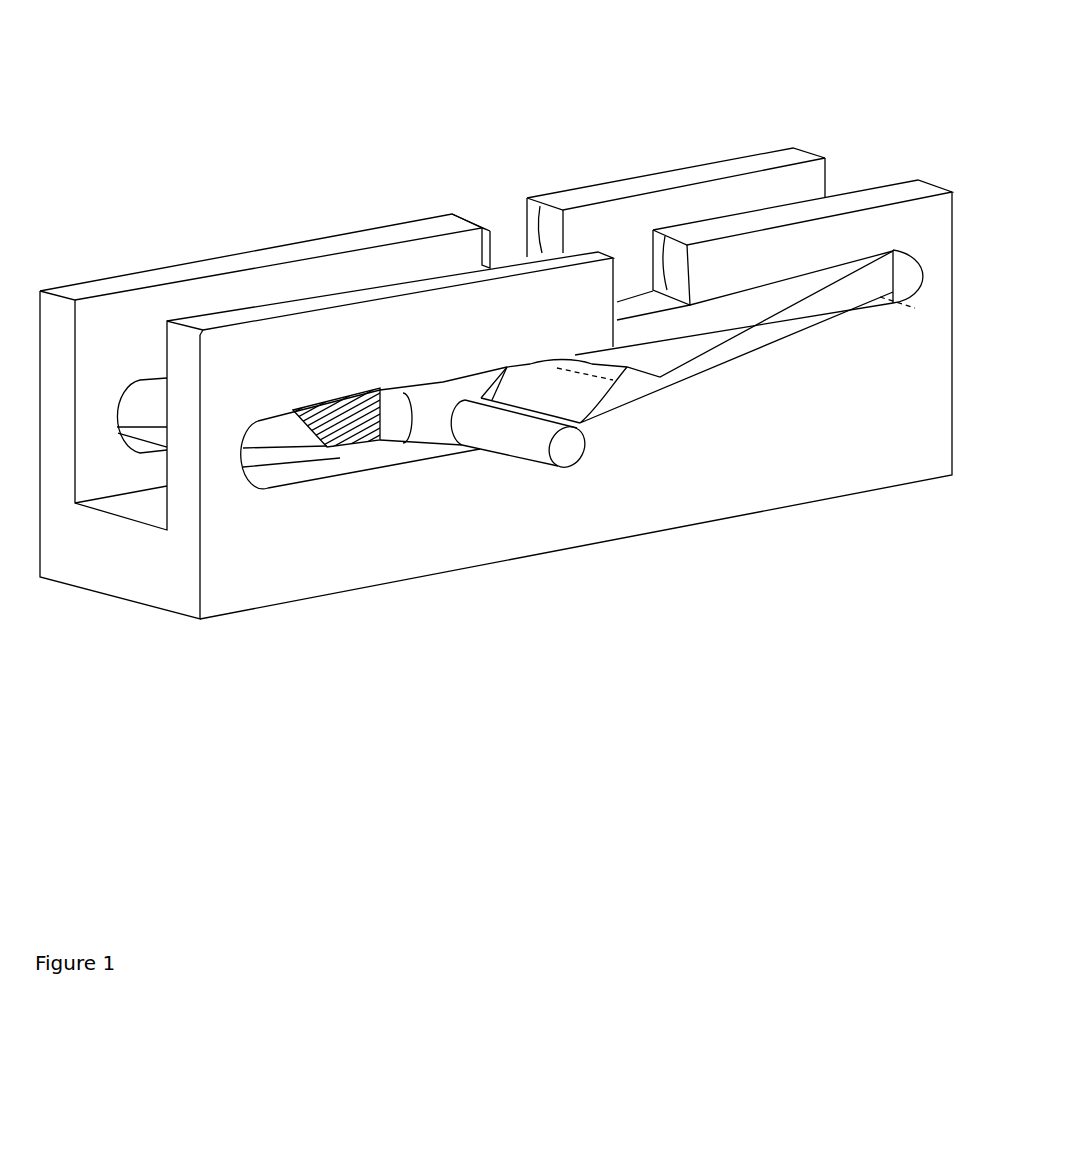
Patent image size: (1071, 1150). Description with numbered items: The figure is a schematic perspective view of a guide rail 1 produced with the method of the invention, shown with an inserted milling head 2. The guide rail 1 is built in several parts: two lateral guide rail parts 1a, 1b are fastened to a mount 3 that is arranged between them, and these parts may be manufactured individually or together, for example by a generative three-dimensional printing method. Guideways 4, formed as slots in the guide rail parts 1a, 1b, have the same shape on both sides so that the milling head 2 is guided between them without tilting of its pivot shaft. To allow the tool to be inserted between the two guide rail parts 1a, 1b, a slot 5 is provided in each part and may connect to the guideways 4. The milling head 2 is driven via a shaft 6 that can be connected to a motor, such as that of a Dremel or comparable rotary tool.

The guide rail 1 is at (328, 263).
The guide rail part 1a is at (418, 228).
The guide rail part 1b is at (845, 203).
The milling head 2 is at (391, 417).
The mount 3 is at (148, 503).
The guideways 4 is at (152, 410).
The slot 5 is at (503, 203).
The shaft 6 is at (566, 449).